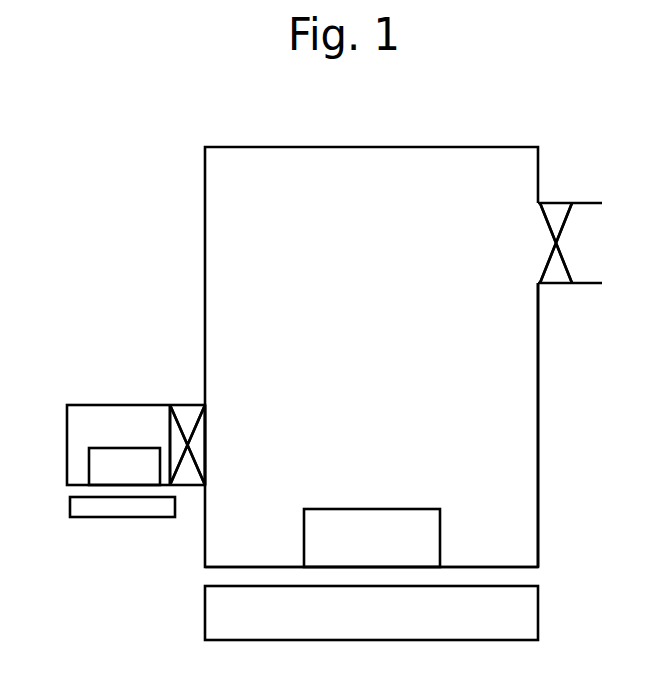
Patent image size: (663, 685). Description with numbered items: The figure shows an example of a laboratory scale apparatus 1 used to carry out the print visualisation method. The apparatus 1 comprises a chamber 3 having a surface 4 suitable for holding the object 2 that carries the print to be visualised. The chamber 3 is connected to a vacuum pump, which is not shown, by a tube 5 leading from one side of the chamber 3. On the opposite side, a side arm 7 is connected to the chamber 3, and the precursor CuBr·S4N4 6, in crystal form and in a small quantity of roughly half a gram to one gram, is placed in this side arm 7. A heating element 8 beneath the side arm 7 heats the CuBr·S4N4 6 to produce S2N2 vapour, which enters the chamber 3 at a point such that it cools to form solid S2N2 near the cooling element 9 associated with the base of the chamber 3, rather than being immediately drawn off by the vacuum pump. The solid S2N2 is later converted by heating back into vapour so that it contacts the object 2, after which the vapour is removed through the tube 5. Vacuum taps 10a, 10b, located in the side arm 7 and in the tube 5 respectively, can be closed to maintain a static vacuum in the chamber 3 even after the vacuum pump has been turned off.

The apparatus 1 is at (127, 215).
The object 2 is at (403, 532).
The chamber 3 is at (547, 412).
The surface 4 is at (250, 565).
The tube 5 is at (585, 197).
The CuBr·S4N4 6 is at (113, 472).
The side arm 7 is at (113, 403).
The heating element 8 is at (112, 510).
The cooling element 9 is at (503, 612).
The vacuum tap 10a is at (205, 445).
The vacuum tap 10b is at (532, 237).